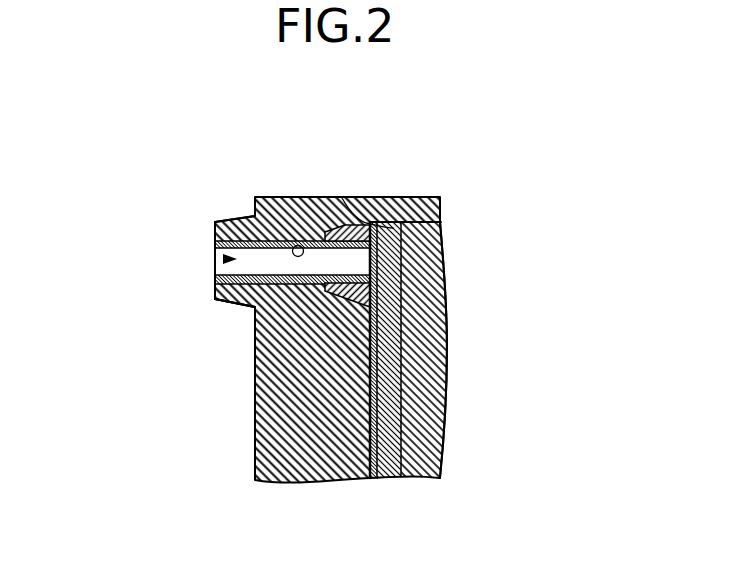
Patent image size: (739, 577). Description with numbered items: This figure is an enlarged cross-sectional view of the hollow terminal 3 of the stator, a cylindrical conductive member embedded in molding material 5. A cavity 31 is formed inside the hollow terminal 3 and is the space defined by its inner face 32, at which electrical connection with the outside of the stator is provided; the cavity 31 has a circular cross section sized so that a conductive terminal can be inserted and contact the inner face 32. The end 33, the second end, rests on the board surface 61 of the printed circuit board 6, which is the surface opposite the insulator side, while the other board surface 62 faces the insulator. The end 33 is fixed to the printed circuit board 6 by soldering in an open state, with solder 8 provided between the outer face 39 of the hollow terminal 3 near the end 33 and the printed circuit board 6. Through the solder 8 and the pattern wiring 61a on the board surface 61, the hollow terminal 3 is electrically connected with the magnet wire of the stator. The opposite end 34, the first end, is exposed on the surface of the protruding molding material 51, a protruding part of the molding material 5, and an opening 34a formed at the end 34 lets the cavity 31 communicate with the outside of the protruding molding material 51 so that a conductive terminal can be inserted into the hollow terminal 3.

The hollow terminal 3 is at (235, 222).
The cavity 31 is at (223, 259).
The inner face 32 is at (298, 245).
The end 33 is at (387, 222).
The end 34 is at (215, 245).
The opening 34a is at (215, 269).
The outer face 39 is at (258, 331).
The molding material 5 is at (256, 366).
The protruding molding material 51 is at (215, 298).
The solder 8 is at (328, 230).
The printed circuit board 6 is at (391, 466).
The board surface 61 is at (372, 432).
The pattern wiring 61a is at (364, 468).
The board surface 62 is at (424, 468).